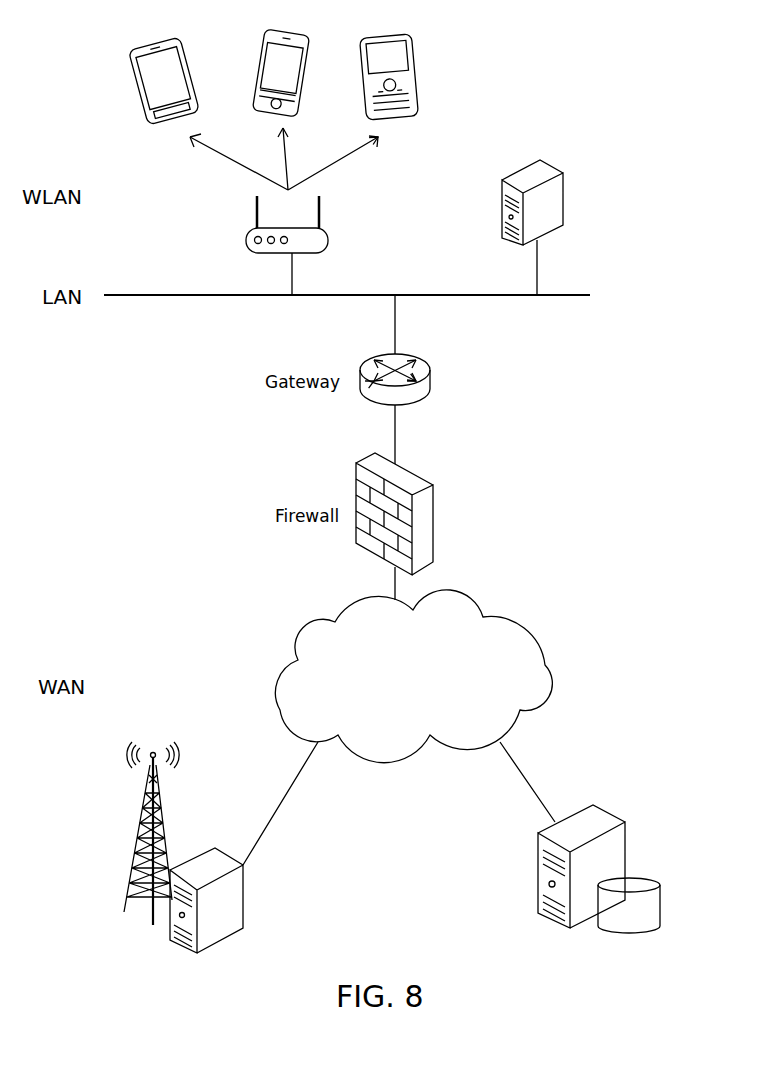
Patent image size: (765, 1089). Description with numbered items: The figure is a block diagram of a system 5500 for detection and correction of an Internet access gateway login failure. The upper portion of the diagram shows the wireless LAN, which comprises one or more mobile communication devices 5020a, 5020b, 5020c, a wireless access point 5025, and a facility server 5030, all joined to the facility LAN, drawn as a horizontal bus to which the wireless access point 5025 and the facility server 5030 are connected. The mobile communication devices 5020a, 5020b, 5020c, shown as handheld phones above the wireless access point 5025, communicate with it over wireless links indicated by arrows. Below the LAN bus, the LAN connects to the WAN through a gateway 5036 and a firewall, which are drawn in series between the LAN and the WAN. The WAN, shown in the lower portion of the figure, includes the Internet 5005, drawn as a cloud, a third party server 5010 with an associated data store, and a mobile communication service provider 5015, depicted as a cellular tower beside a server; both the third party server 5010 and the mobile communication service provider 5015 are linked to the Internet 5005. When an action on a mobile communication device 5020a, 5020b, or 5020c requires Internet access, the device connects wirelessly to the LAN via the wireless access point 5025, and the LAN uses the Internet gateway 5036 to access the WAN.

The system 5500 is at (610, 108).
The mobile communication device 5020a is at (130, 48).
The mobile communication device 5020b is at (280, 30).
The mobile communication device 5020c is at (412, 36).
The wireless access point 5025 is at (330, 238).
The facility server 5030 is at (563, 199).
The gateway 5036 is at (430, 362).
The Internet 5005 is at (290, 660).
The mobile communication service provider 5015 is at (127, 898).
The third party server 5010 is at (537, 863).